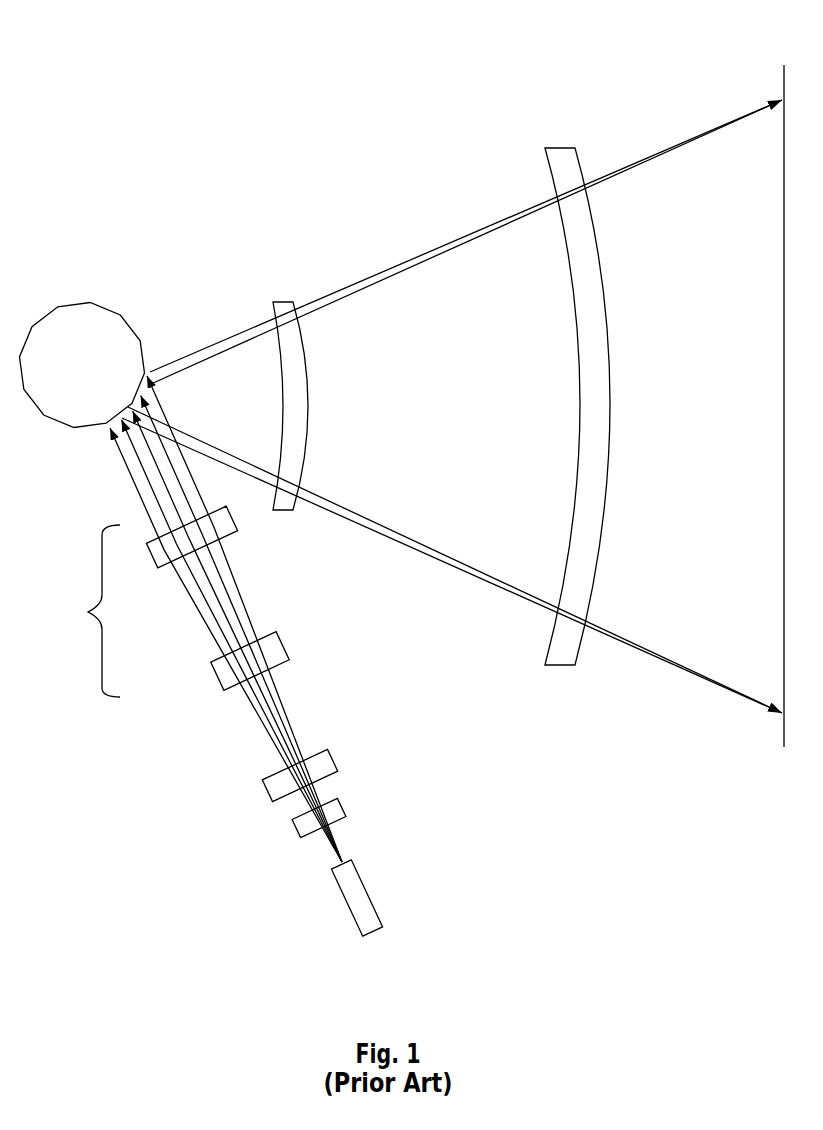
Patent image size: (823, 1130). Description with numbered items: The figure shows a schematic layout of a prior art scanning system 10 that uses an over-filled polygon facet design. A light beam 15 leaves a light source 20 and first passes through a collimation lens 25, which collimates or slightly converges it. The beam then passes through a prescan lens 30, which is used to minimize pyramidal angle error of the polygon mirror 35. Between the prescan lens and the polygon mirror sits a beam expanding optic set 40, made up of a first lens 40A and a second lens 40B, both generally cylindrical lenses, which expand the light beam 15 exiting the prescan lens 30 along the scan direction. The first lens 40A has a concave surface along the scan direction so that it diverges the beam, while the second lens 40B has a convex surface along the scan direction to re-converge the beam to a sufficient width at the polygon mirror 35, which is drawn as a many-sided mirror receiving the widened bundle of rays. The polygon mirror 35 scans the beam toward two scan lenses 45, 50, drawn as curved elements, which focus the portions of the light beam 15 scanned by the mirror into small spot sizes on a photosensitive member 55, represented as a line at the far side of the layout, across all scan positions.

The scanning system 10 is at (158, 80).
The light beam 15 is at (350, 841).
The light source 20 is at (368, 890).
The collimation lens 25 is at (345, 807).
The prescan lens 30 is at (338, 762).
The polygon mirror 35 is at (93, 380).
The beam expanding optic set 40 is at (83, 612).
The first lens 40A is at (217, 678).
The second lens 40B is at (148, 553).
The scan lens 45 is at (283, 302).
The scan lens 50 is at (565, 147).
The photosensitive member 55 is at (783, 77).